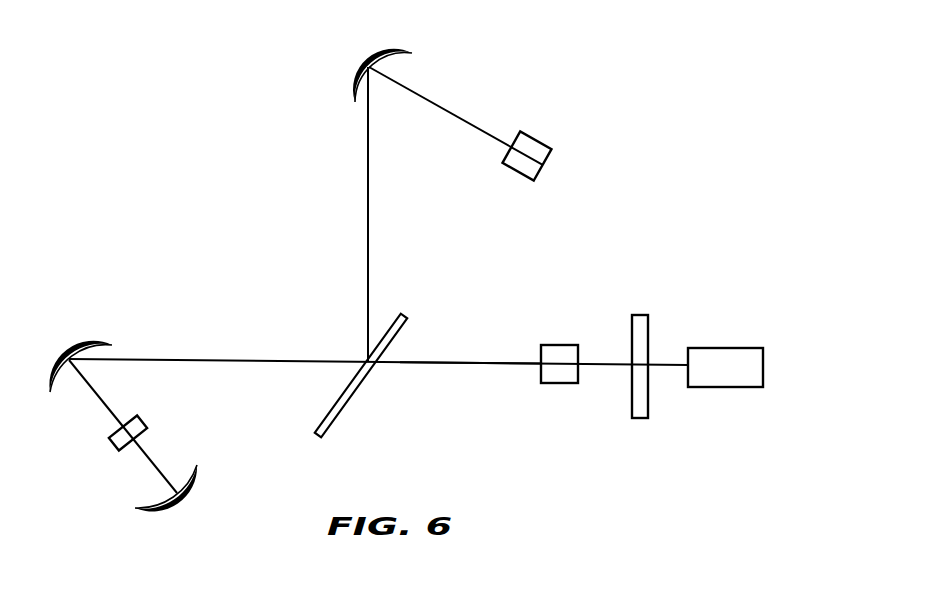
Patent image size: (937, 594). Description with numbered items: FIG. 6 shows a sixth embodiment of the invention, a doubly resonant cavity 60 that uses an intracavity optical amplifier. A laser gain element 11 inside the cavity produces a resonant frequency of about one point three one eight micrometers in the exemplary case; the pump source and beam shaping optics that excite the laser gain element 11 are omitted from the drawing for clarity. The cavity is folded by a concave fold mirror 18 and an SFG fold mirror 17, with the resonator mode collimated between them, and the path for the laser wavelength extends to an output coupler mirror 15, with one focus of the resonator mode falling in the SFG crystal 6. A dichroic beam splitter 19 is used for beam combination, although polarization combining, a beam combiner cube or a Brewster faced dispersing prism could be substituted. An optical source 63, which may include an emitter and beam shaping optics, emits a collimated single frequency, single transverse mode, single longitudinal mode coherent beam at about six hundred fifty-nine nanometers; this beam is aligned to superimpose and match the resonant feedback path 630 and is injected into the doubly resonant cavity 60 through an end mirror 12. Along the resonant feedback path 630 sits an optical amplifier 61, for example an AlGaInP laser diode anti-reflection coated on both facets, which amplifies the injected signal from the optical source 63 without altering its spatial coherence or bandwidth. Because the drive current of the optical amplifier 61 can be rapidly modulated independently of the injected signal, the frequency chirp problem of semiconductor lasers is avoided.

The SFG crystal 6 is at (110, 440).
The laser gain element 11 is at (540, 139).
The end mirror 12 is at (641, 419).
The output coupler mirror 15 is at (152, 515).
The SFG fold mirror 17 is at (66, 353).
The concave fold mirror 18 is at (367, 63).
The dichroic beam splitter 19 is at (317, 438).
The doubly resonant cavity 60 is at (292, 208).
The optical amplifier 61 is at (562, 384).
The optical source 63 is at (727, 348).
The resonant feedback path 630 is at (468, 366).